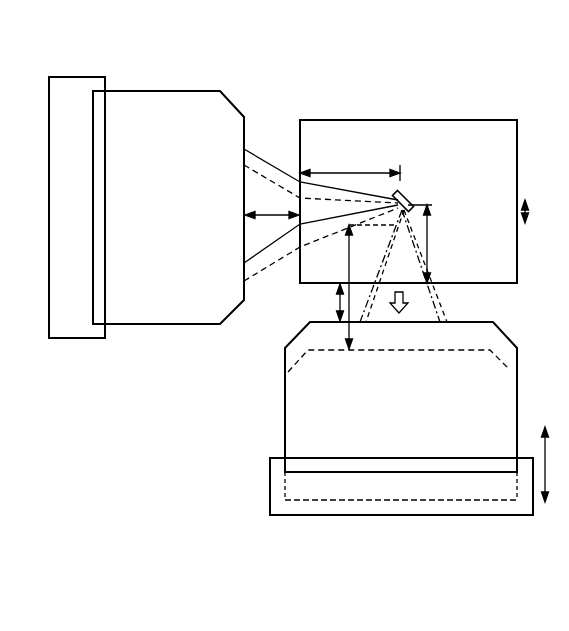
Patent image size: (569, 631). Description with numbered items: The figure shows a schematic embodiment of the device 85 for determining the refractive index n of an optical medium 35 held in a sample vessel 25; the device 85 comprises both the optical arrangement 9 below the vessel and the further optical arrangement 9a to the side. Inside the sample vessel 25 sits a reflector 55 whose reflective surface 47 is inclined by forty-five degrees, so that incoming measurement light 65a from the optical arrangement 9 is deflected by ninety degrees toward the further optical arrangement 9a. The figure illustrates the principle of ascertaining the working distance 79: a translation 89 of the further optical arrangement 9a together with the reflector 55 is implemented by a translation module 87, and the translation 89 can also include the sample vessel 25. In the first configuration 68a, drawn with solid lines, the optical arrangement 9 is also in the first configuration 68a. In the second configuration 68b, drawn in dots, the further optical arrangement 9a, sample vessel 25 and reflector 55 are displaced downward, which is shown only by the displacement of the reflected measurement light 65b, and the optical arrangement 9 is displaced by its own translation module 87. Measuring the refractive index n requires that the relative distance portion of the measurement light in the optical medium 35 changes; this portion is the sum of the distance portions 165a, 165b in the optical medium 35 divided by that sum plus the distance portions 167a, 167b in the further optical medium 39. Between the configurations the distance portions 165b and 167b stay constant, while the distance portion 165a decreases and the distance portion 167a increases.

The device 85 is at (387, 70).
The translation module 87 is at (77, 78).
The further optical arrangement 9a is at (180, 314).
The sample vessel 25 is at (434, 119).
The optical medium 35 is at (503, 143).
The refractive index n is at (506, 267).
The reflected measurement light 65b is at (268, 180).
The incoming measurement light 65a is at (436, 296).
The reflector 55 is at (429, 187).
The reflective surface 47 is at (393, 192).
The distance portion in the optical medium 165b is at (338, 172).
The distance portion in the optical medium 165a is at (432, 250).
The distance portion in the further optical medium 167a is at (340, 302).
The distance portion in the further optical medium 167b is at (260, 212).
The translation 89 is at (531, 213).
The working distance 79 is at (315, 308).
The further optical medium 39 is at (345, 262).
The optical arrangement 9 is at (426, 397).
The first configuration 68a is at (519, 360).
The second configuration 68b is at (420, 355).